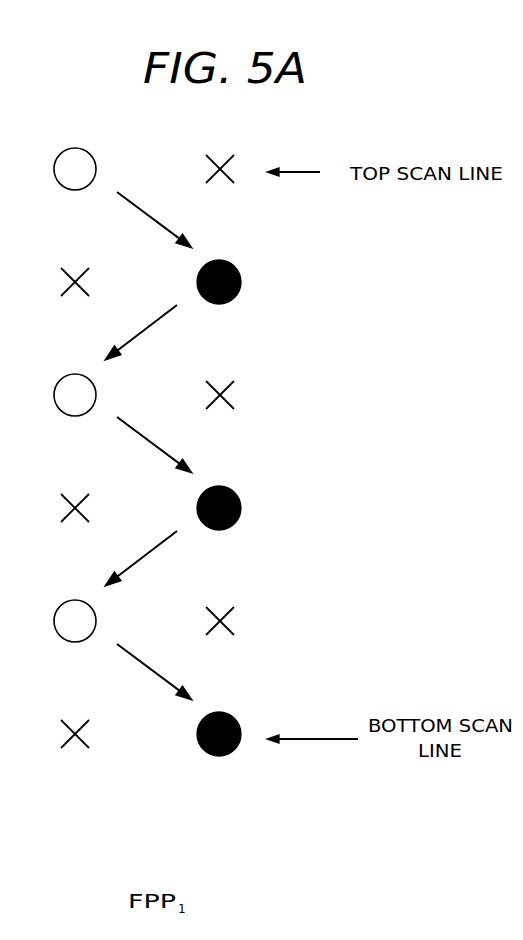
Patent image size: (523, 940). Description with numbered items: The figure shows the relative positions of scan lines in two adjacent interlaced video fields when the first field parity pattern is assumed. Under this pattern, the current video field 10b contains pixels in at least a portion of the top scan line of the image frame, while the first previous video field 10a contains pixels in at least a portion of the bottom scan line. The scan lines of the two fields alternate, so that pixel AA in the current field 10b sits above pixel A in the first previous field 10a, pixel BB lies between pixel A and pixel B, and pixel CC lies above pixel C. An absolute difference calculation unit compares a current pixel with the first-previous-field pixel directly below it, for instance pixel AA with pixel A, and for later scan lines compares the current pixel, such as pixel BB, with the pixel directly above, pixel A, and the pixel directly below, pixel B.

The current video field 10b is at (86, 491).
The first previous video field 10a is at (226, 494).
The pixel AA is at (75, 169).
The pixel BB is at (75, 395).
The pixel CC is at (75, 621).
The pixel A is at (219, 282).
The pixel B is at (219, 508).
The pixel C is at (219, 734).